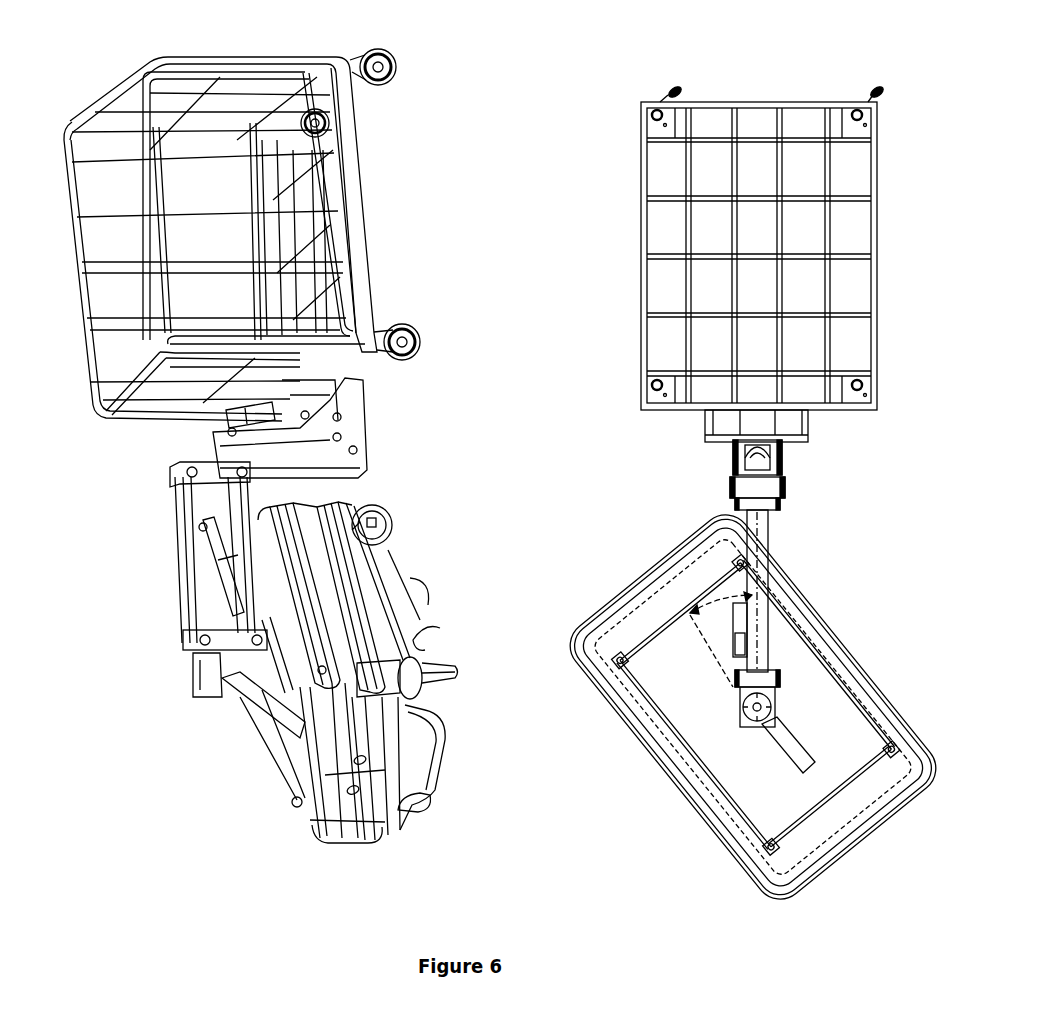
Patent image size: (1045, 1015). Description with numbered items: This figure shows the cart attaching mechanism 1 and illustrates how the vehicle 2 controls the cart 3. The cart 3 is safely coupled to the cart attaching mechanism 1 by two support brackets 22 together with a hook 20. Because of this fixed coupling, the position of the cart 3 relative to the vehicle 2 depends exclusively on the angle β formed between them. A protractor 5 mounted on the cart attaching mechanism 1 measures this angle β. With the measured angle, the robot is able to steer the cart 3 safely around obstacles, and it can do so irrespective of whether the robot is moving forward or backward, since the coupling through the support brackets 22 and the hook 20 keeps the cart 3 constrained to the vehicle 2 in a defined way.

The cart attaching mechanism 1 is at (237, 700).
The vehicle 2 is at (335, 846).
The cart 3 is at (82, 348).
The protractor 5 is at (740, 702).
The hook 20 is at (757, 398).
The support brackets 22 is at (803, 420).